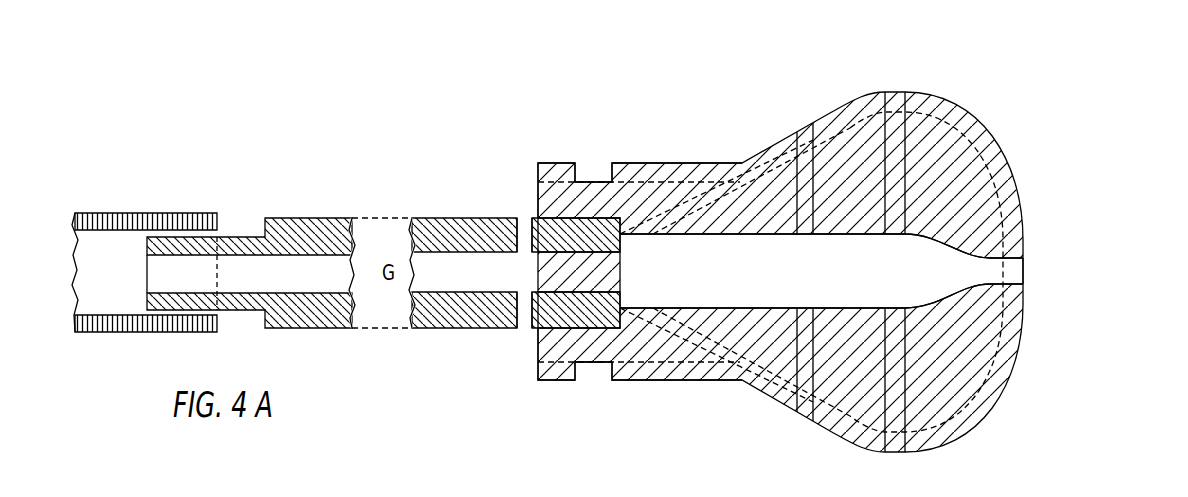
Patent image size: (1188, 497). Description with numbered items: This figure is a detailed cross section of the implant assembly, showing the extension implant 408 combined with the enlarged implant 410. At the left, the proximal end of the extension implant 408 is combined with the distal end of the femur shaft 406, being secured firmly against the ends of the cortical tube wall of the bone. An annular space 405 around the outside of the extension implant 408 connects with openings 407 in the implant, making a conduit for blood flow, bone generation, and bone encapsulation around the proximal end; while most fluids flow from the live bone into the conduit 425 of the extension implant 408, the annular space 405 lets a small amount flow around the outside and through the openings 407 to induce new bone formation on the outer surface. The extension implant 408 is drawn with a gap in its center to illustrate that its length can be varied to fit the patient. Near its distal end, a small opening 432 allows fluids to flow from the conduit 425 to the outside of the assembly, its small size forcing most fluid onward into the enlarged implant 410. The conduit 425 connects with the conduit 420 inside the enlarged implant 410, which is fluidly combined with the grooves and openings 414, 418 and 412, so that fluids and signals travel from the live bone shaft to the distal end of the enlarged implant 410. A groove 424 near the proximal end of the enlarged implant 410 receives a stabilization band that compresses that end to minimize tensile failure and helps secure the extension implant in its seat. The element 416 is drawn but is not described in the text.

The annular space 405 is at (141, 232).
The femur shaft 406 is at (140, 334).
The openings 407 is at (237, 230).
The extension implant 408 is at (283, 332).
The enlarged implant 410 is at (857, 404).
The opening 412 is at (1027, 271).
The groove 414 is at (803, 116).
The seal ring 416 is at (593, 247).
The groove 418 is at (776, 156).
The conduit 420 is at (786, 281).
The groove 424 is at (592, 155).
The conduit 425 is at (488, 286).
The opening 432 is at (519, 211).